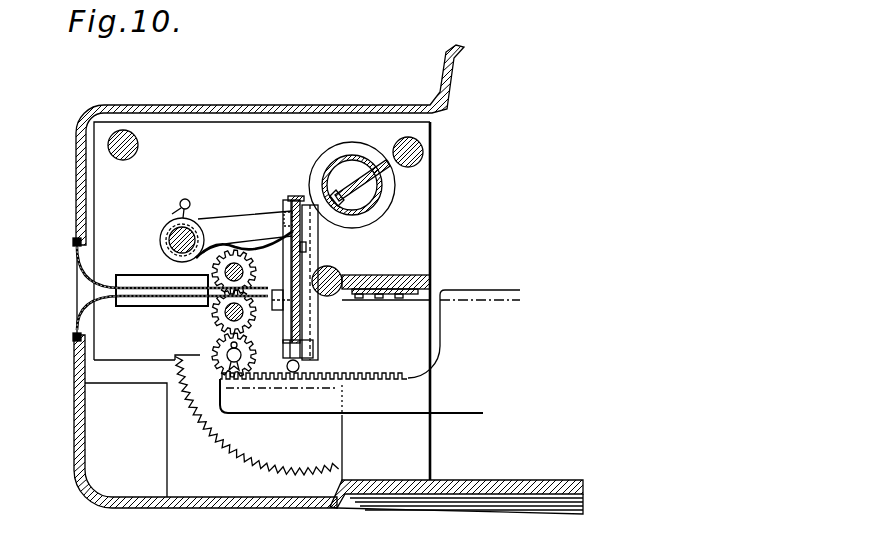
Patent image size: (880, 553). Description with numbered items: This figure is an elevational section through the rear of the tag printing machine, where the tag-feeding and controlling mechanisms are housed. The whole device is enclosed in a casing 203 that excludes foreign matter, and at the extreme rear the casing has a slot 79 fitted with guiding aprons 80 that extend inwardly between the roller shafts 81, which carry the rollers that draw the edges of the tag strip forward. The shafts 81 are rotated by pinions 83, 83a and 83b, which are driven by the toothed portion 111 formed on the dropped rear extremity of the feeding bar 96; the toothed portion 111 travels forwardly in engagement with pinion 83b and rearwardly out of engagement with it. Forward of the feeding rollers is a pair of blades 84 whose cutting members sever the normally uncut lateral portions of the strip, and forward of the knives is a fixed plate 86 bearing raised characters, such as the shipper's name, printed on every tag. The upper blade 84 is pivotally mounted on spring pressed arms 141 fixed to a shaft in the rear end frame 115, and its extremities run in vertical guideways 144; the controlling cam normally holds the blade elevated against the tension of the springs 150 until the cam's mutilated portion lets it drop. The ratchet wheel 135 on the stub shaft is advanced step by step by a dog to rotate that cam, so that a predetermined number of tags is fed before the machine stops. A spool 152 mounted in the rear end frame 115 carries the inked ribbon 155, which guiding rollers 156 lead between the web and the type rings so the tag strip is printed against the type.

The casing 203 is at (175, 95).
The rear end frame 115 is at (210, 130).
The spool 152 is at (350, 163).
The springs 150 is at (183, 199).
The vertical guideways 144 is at (311, 213).
The blades 84 is at (297, 195).
The spring pressed arms 141 is at (262, 207).
The roller shafts 81 is at (241, 250).
The pinion 83 is at (227, 262).
The inked ribbon 155 is at (320, 240).
The guiding rollers 156 is at (326, 296).
The fixed plate 86 is at (434, 274).
The feeding bar 96 is at (464, 334).
The guiding aprons 80 is at (100, 297).
The slot 79 is at (86, 288).
The pinion 83a is at (216, 312).
The pinion 83b is at (234, 355).
The toothed portion 111 is at (320, 406).
The ratchet wheel 135 is at (328, 424).